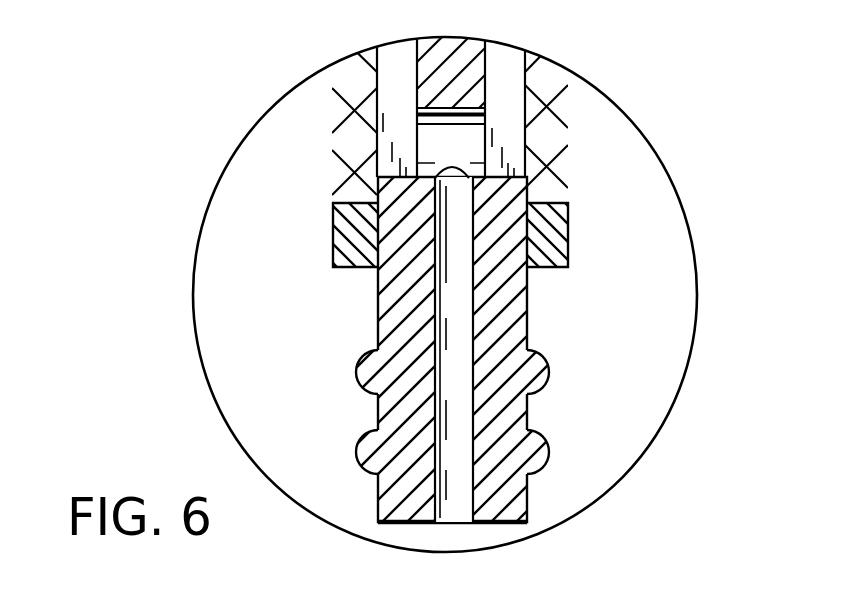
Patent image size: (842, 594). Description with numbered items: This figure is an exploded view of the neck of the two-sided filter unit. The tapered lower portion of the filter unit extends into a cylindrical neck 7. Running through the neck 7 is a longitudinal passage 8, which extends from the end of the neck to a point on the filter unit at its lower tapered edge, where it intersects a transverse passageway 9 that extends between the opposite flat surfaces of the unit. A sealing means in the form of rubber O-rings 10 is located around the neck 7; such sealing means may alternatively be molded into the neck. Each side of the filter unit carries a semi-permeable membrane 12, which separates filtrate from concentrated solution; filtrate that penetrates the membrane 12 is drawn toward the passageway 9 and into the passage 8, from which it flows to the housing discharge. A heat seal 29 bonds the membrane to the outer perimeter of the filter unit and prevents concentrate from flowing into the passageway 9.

The neck 7 is at (528, 305).
The longitudinal passage 8 is at (461, 315).
The transverse passageway 9 is at (458, 155).
The O-rings 10 is at (541, 368).
The semi-permeable membrane 12 is at (562, 115).
The heat seal 29 is at (548, 235).